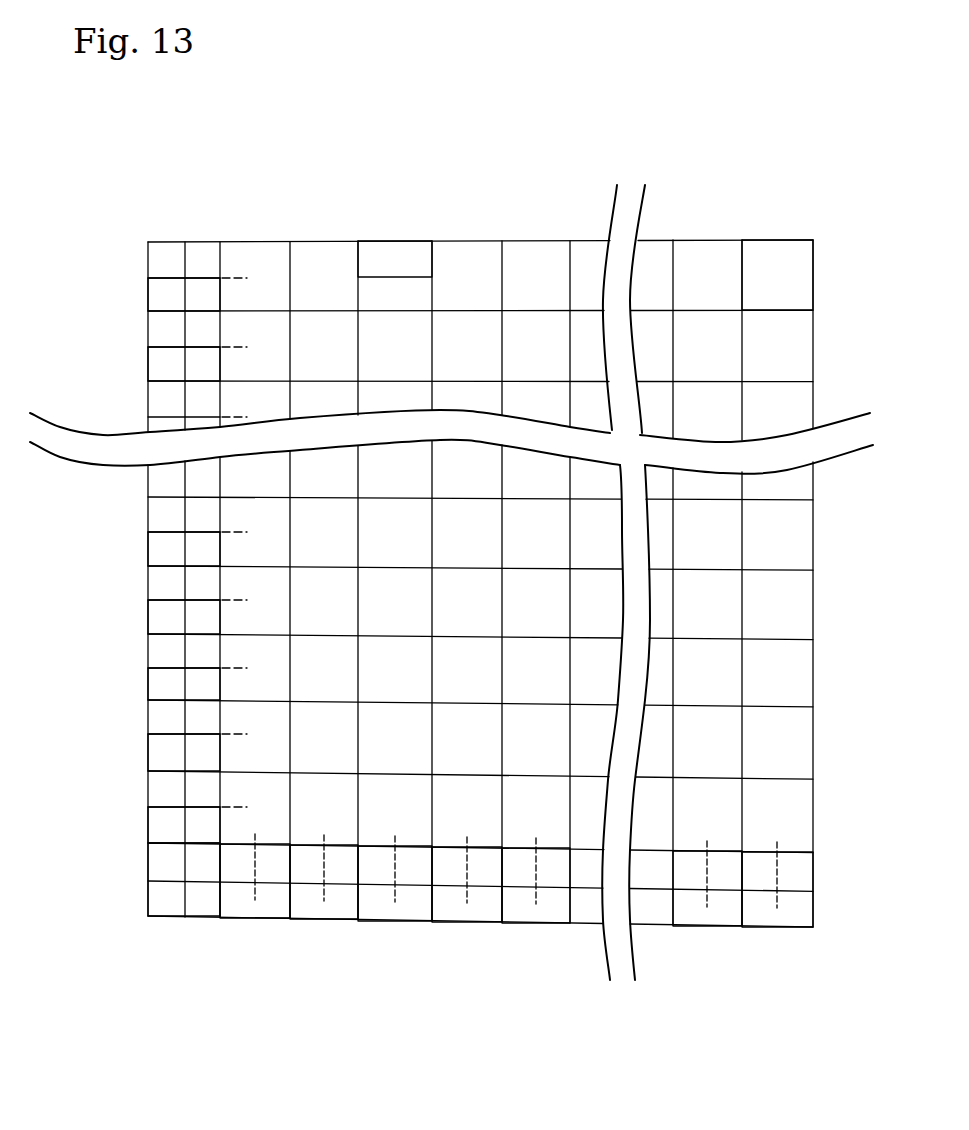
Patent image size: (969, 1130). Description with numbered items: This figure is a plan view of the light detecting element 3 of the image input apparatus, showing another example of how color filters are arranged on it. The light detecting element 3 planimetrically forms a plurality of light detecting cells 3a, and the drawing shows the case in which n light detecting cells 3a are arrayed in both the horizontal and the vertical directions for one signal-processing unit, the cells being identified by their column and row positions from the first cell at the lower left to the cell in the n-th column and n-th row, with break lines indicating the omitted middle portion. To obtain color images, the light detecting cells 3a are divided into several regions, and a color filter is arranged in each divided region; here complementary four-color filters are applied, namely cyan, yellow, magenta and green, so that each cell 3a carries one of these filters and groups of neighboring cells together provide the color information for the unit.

The light detecting element 3 is at (504, 183).
The light detecting cell 3a is at (378, 250).